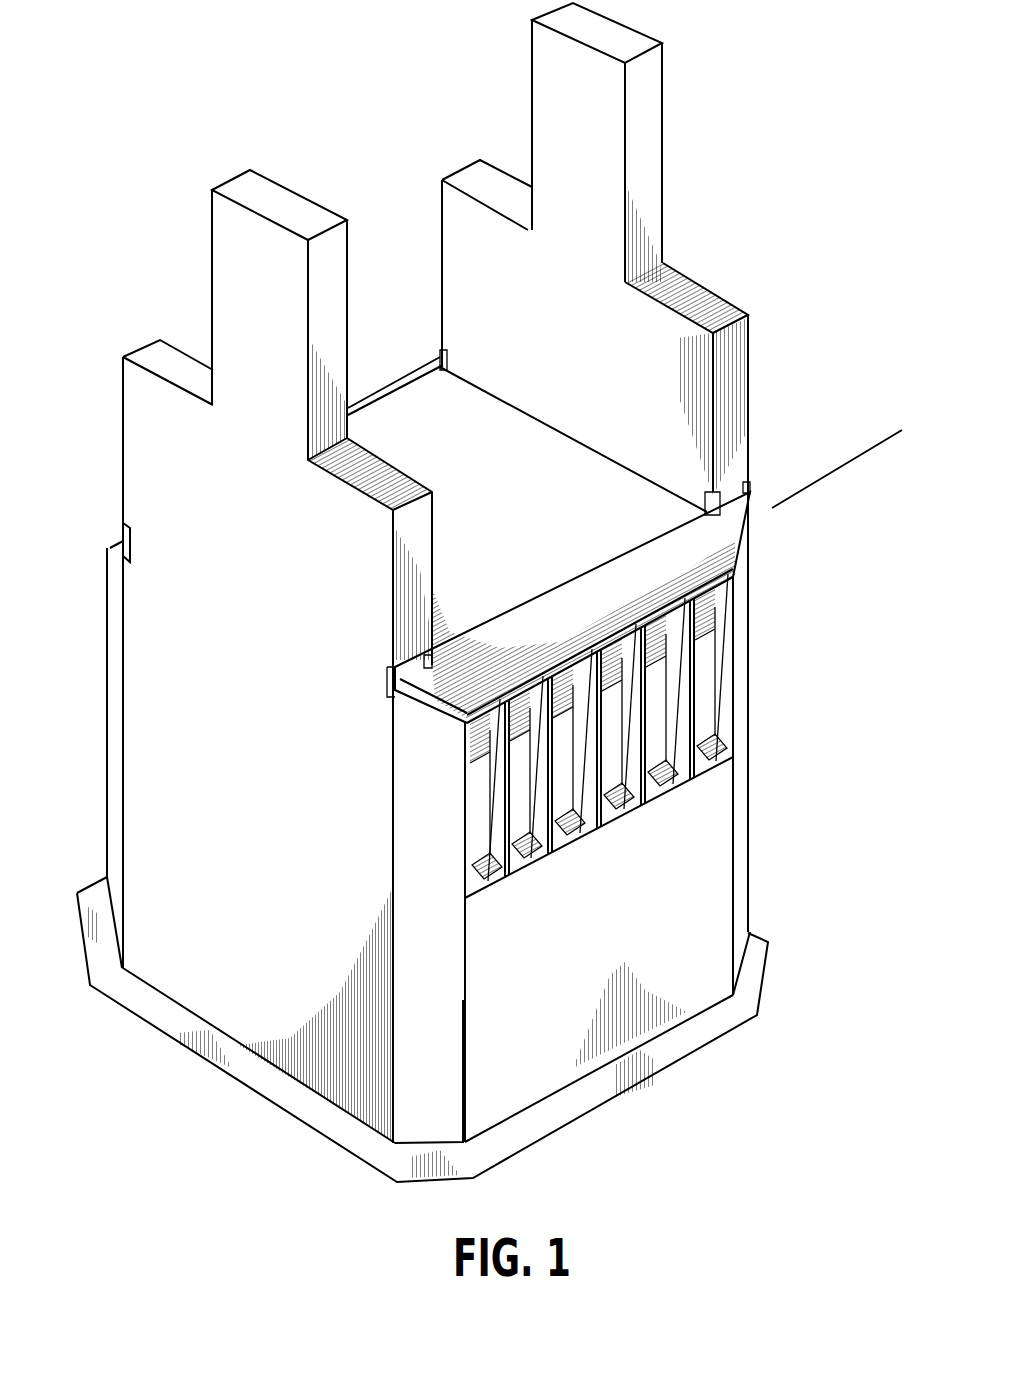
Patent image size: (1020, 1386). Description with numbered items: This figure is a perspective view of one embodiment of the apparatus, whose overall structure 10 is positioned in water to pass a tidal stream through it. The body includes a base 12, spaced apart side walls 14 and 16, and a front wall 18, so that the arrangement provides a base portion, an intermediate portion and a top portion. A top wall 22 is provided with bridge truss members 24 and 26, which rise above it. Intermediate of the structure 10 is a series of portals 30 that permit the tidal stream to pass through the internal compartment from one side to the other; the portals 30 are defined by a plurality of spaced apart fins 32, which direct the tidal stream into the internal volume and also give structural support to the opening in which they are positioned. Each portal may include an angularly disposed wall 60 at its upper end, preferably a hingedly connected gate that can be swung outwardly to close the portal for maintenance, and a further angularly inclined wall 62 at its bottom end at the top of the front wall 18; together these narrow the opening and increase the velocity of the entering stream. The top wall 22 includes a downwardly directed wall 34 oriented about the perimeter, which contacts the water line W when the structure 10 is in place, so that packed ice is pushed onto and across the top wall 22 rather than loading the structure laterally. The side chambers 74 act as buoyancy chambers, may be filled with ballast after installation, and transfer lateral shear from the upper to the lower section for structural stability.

The structure 10 is at (738, 196).
The base 12 is at (678, 1046).
The side wall 14 is at (240, 736).
The side wall 16 is at (675, 410).
The front wall 18 is at (702, 877).
The top wall 22 is at (463, 493).
The bridge truss member 24 is at (242, 341).
The bridge truss member 26 is at (555, 151).
The portal 30 is at (713, 677).
The fin 32 is at (712, 765).
The downwardly directed wall 34 is at (627, 572).
The angularly disposed wall 60 is at (723, 607).
The angularly inclined wall 62 is at (718, 743).
The side chamber 74 is at (403, 1090).
The water line W is at (837, 469).